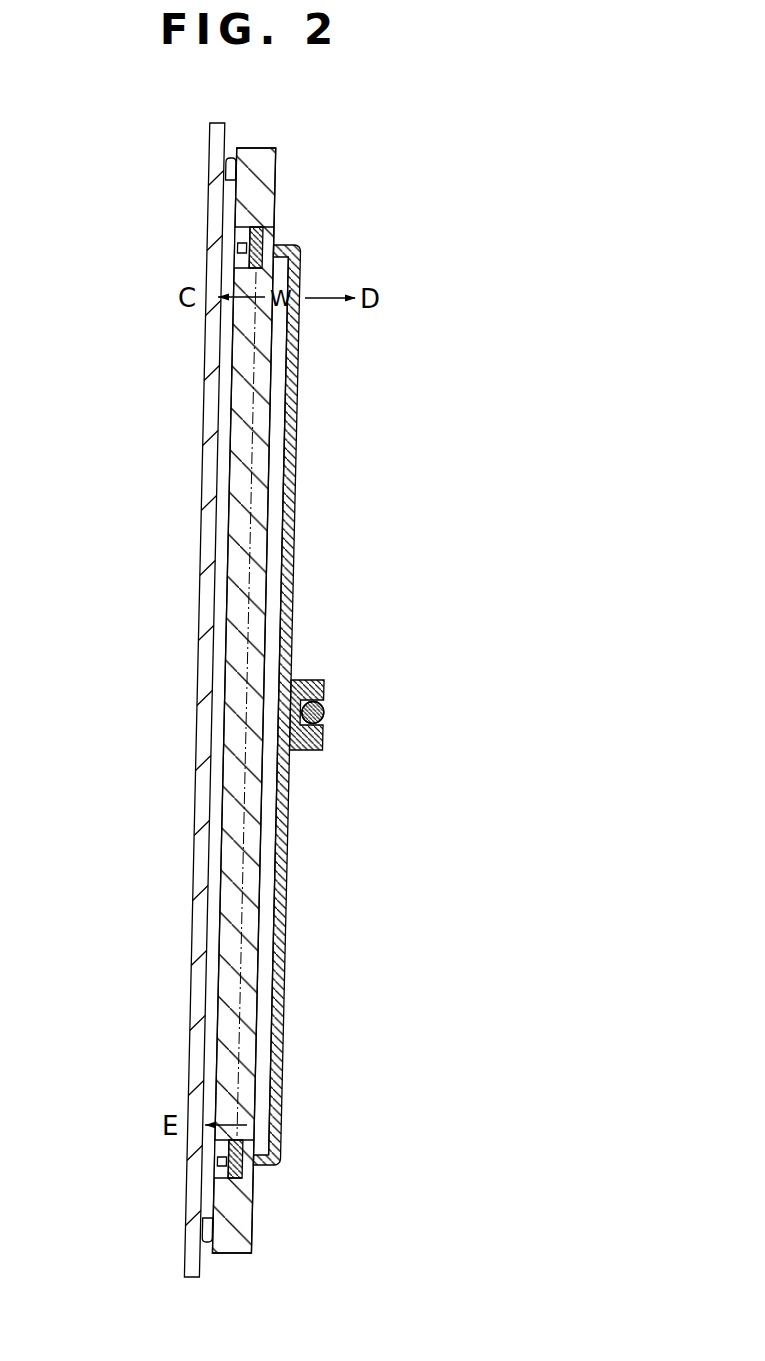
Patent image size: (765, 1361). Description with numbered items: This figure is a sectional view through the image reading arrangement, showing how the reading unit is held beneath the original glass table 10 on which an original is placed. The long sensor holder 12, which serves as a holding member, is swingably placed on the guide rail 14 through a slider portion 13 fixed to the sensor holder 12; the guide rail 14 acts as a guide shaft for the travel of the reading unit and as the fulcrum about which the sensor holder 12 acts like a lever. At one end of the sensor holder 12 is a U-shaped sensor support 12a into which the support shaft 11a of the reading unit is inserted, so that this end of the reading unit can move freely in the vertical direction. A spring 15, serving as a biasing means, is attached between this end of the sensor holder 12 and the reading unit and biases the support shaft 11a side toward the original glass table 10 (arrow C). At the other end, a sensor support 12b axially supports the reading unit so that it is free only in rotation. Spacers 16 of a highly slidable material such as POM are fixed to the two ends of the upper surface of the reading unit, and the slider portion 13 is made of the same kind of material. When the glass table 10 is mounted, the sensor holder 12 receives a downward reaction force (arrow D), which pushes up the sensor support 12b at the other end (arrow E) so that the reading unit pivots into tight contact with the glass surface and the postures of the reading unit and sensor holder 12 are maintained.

The original glass table 10 is at (208, 372).
The support shaft 11a is at (250, 266).
The sensor holder 12 is at (283, 1022).
The sensor support 12a is at (240, 247).
The sensor support 12b is at (220, 1160).
The slider portion 13 is at (323, 684).
The guide rail 14 is at (326, 713).
The spring 15 is at (293, 322).
The spacers 16 is at (231, 160).